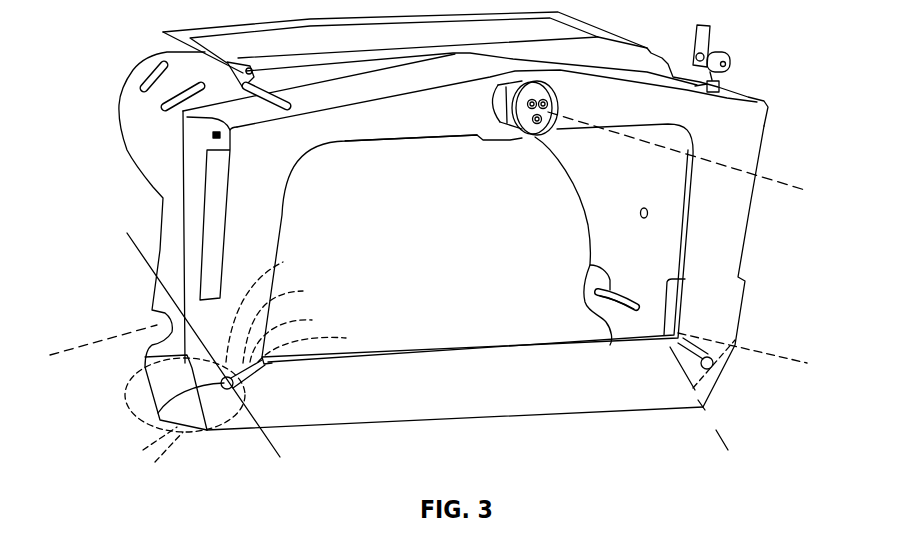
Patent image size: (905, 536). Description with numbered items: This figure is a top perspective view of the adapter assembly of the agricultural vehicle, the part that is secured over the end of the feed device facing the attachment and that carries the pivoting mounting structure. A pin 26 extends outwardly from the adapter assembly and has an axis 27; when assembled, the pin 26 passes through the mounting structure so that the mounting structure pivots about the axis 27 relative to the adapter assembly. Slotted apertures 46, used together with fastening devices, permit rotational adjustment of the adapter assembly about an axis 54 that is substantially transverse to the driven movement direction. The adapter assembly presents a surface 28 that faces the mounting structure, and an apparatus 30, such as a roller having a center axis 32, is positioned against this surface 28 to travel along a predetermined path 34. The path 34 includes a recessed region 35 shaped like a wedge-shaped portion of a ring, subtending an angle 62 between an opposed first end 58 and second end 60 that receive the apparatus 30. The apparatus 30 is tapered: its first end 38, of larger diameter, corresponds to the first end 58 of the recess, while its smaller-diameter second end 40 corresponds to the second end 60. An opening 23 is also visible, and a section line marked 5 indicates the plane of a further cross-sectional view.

The opening 23 is at (493, 283).
The pin 26 is at (504, 128).
The axis 27 is at (782, 178).
The surface 28 is at (373, 124).
The apparatus 30 is at (128, 382).
The center axis 32 is at (755, 327).
The predetermined path 34 is at (269, 306).
The recessed region 35 is at (287, 322).
The first end 38 is at (158, 413).
The second end 40 is at (295, 335).
The slotted apertures 46 is at (122, 105).
The axis 54 is at (68, 347).
The first end 58 is at (230, 422).
The second end 60 is at (316, 345).
The angle 62 is at (792, 360).
The section line 5 is at (153, 221).